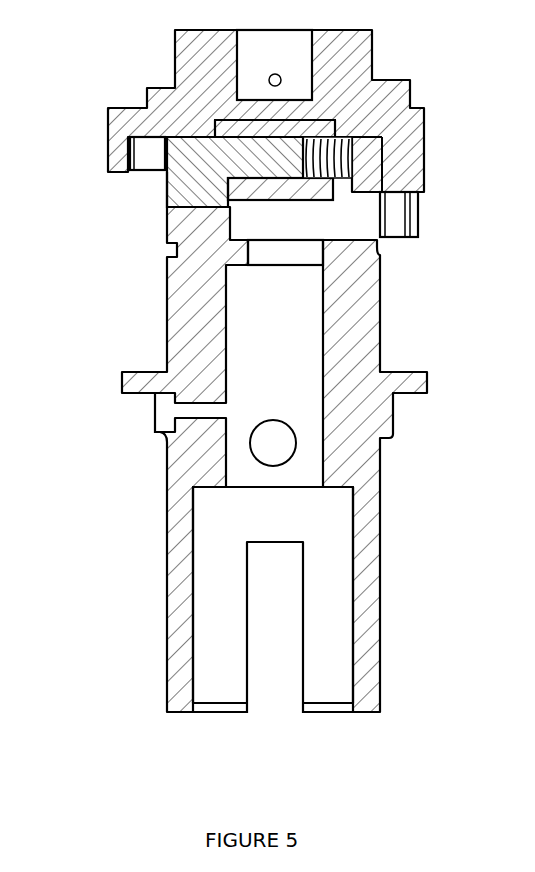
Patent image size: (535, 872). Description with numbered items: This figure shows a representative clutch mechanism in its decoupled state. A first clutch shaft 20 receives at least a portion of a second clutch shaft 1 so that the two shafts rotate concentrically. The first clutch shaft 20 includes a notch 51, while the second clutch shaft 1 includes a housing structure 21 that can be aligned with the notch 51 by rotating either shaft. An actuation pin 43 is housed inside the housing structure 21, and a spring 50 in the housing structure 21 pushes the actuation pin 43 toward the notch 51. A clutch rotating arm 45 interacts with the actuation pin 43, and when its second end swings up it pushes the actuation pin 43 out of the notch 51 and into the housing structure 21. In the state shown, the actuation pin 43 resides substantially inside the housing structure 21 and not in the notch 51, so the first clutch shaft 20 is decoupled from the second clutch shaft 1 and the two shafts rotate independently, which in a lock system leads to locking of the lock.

The second clutch shaft 1 is at (348, 283).
The first clutch shaft 20 is at (377, 112).
The housing structure 21 is at (353, 150).
The actuation pin 43 is at (185, 192).
The clutch rotating arm 45 is at (157, 187).
The spring 50 is at (355, 160).
The notch 51 is at (148, 152).